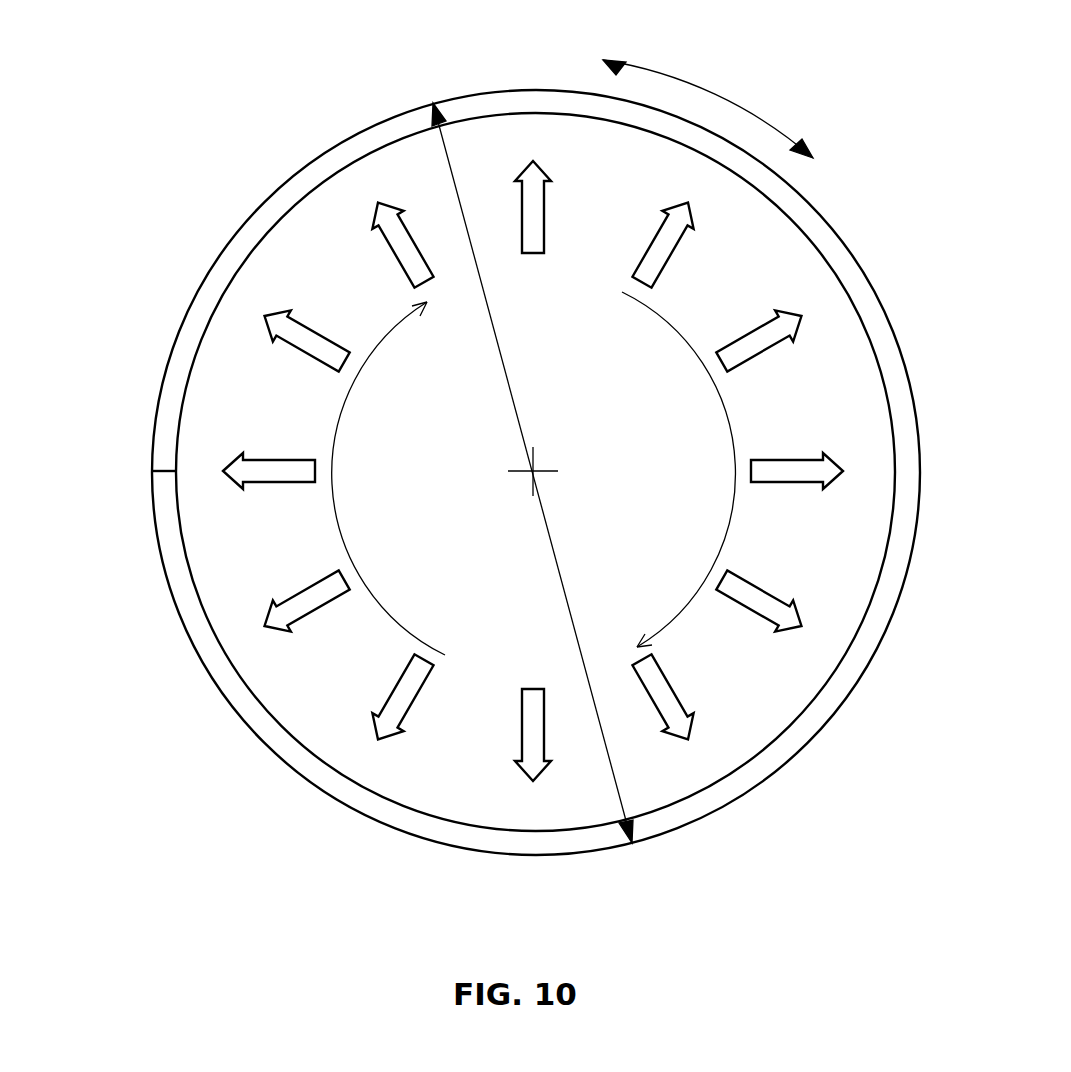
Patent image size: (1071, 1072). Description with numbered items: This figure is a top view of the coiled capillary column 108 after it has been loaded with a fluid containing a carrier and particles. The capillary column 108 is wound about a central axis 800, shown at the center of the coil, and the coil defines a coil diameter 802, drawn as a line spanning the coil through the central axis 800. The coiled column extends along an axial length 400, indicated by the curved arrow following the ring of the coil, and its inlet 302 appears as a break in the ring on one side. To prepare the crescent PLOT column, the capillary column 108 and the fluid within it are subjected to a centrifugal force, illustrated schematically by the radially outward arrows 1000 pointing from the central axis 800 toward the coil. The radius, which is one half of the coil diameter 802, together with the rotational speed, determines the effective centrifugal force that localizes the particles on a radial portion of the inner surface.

The capillary column 108 is at (342, 792).
The inlet 302 is at (158, 474).
The axial length 400 is at (723, 100).
The central axis 800 is at (533, 472).
The coil diameter 802 is at (460, 202).
The arrows 1000 is at (773, 330).